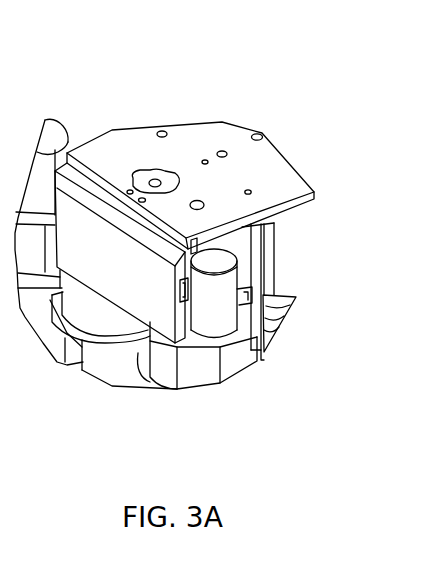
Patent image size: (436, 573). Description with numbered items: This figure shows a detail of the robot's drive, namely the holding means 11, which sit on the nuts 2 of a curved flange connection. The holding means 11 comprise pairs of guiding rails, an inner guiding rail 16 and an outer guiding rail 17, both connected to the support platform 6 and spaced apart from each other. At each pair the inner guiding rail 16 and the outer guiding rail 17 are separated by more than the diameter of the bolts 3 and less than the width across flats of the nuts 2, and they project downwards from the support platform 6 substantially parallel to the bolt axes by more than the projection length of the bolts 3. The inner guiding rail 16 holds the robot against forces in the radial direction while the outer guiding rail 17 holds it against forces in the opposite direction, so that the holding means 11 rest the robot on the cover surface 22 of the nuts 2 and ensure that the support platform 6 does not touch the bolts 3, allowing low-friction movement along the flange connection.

The holding means 11 is at (250, 48).
The bolt 3 is at (37, 178).
The support platform 6 is at (292, 178).
The inner guiding rail 16 is at (263, 250).
The outer guiding rail 17 is at (117, 267).
The cover surface 22 is at (237, 337).
The nut 2 is at (230, 358).